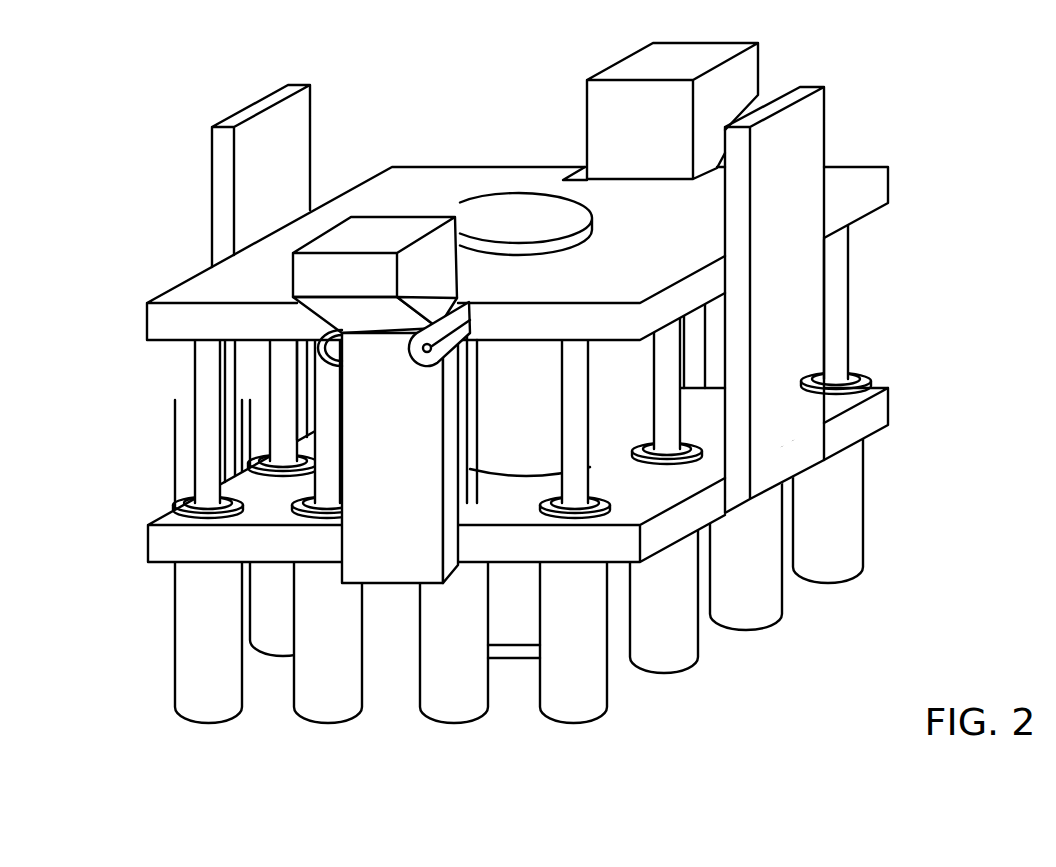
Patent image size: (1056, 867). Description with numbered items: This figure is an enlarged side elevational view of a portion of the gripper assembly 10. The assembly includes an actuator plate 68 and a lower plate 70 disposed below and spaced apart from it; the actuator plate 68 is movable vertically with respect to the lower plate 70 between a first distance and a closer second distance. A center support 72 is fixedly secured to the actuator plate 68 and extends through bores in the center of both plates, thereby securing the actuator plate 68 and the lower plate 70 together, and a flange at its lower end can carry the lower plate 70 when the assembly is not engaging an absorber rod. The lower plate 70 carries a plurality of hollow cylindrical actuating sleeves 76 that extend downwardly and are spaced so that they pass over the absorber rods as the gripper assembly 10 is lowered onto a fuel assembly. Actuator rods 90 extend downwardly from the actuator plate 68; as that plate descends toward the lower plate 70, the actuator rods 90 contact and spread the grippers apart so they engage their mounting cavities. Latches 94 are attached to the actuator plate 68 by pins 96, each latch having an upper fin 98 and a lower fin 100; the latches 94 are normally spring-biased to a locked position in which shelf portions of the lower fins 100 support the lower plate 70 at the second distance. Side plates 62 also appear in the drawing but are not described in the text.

The gripper assembly 10 is at (114, 386).
The side guide plates 62 is at (251, 104).
The actuator plate 68 is at (382, 190).
The lower plate 70 is at (165, 517).
The center support 72 is at (493, 203).
The actuating sleeves 76 is at (308, 668).
The actuator rods 90 is at (313, 420).
The latches 94 is at (587, 110).
The pins 96 is at (520, 330).
The upper fins 98 is at (397, 217).
The lower fins 100 is at (450, 570).